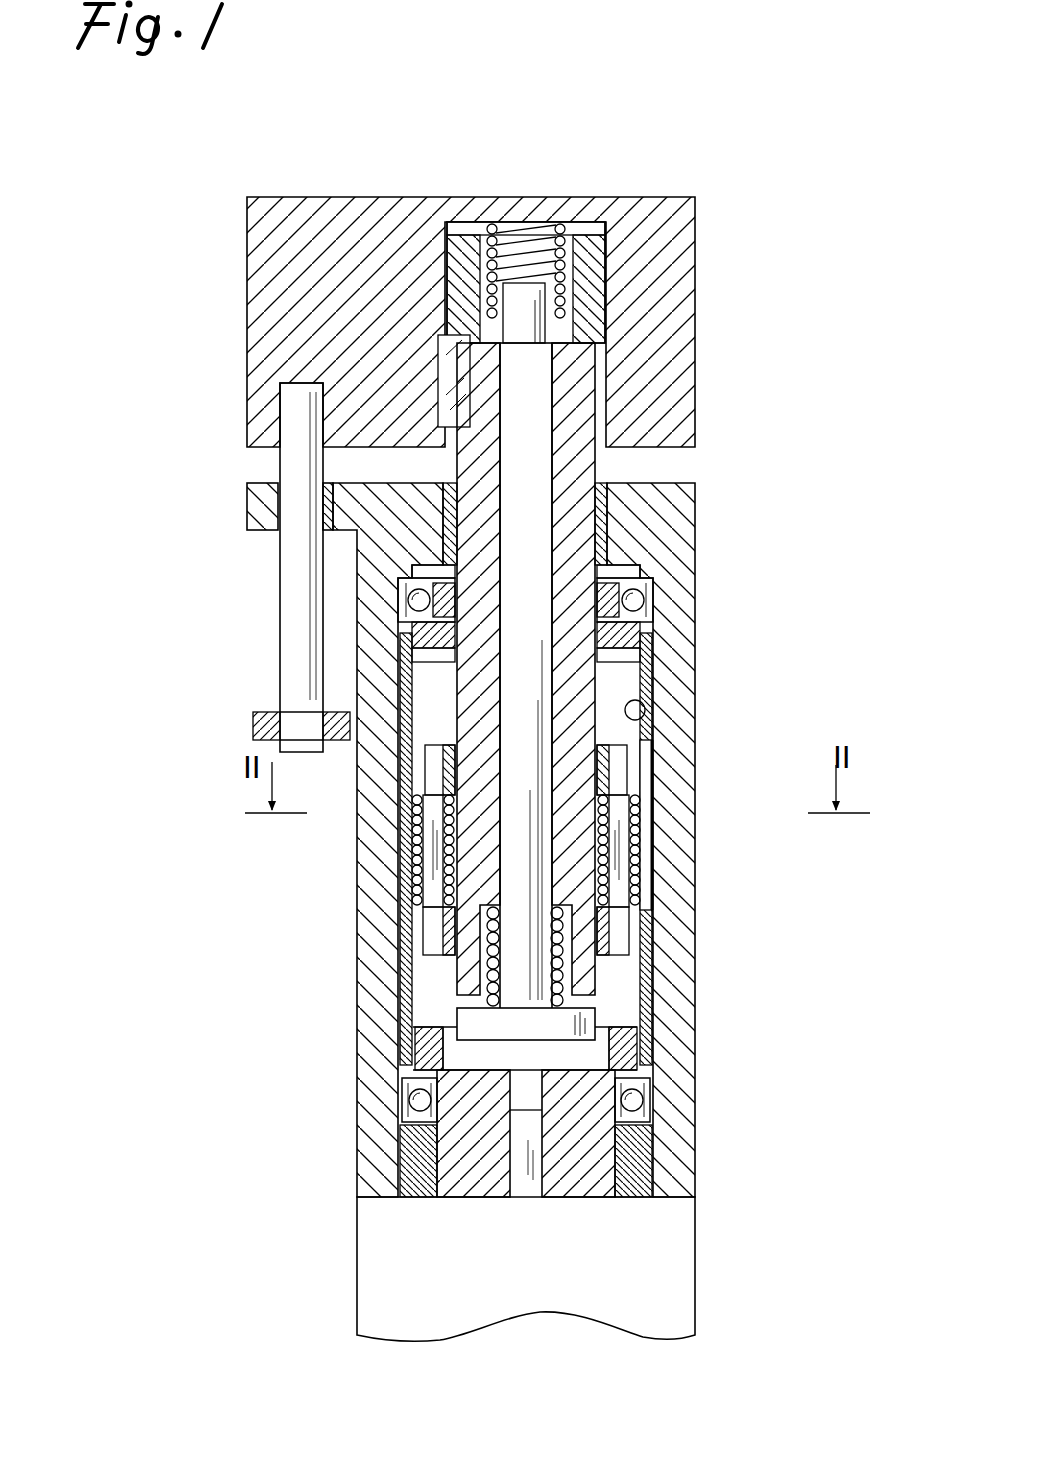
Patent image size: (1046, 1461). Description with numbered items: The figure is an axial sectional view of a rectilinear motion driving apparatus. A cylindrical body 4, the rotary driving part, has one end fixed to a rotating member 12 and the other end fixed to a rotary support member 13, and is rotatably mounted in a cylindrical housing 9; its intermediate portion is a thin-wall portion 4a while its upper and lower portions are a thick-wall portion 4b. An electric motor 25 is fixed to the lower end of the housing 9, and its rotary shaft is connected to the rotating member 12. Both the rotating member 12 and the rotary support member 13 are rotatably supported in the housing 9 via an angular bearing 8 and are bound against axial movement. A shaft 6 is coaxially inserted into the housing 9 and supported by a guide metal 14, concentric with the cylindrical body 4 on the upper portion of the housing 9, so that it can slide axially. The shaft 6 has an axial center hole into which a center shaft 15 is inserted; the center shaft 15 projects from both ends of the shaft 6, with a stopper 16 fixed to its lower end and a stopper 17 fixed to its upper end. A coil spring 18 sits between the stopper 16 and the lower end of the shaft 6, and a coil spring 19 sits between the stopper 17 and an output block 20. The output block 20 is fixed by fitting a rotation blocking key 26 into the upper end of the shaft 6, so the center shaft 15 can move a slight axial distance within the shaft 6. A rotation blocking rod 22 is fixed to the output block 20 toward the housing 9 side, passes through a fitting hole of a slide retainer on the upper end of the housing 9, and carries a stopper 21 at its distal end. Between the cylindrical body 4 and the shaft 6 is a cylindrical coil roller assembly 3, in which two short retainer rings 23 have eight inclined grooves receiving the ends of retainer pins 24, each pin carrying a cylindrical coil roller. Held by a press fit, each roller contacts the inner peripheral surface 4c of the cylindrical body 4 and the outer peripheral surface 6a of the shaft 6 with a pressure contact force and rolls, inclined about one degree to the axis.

The cylindrical coil roller assembly 3 is at (400, 855).
The cylindrical body 4 is at (654, 858).
The thin-wall portion 4a is at (648, 790).
The thick-wall portion 4b is at (648, 690).
The inner peripheral surface 4c is at (648, 712).
The shaft 6 is at (577, 398).
The outer peripheral surface 6a is at (600, 662).
The angular bearing 8 is at (640, 603).
The cylindrical housing 9 is at (690, 1105).
The rotating member 12 is at (600, 1170).
The rotary support member 13 is at (606, 580).
The guide metal 14 is at (612, 512).
The center shaft 15 is at (535, 763).
The stopper 16 is at (595, 1020).
The stopper 17 is at (596, 293).
The coil spring 18 is at (487, 977).
The coil spring 19 is at (562, 250).
The output block 20 is at (326, 222).
The stopper 21 is at (250, 722).
The rotation blocking rod 22 is at (290, 583).
The retainer ring 23 is at (605, 782).
The retainer pin 24 is at (433, 758).
The electric motor 25 is at (373, 1245).
The rotation blocking key 26 is at (443, 372).